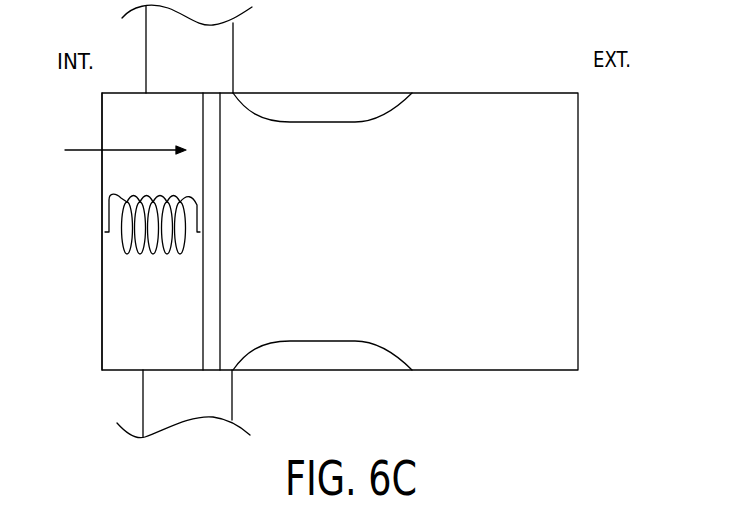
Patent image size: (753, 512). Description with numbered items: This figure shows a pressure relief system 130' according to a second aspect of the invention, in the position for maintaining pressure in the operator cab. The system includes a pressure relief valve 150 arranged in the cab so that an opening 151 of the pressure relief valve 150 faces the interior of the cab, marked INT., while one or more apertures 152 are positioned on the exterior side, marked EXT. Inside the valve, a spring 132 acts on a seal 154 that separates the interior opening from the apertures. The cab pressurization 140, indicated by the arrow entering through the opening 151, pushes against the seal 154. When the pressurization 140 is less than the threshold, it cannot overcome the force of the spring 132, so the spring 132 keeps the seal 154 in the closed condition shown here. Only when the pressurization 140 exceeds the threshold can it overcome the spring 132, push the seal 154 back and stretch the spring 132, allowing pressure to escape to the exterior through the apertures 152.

The pressure relief system 130' is at (357, 221).
The spring 132 is at (127, 264).
The pressurization 140 is at (121, 150).
The pressure relief valve 150 is at (535, 370).
The opening 151 is at (102, 312).
The apertures 152 is at (325, 100).
The seal 154 is at (221, 178).